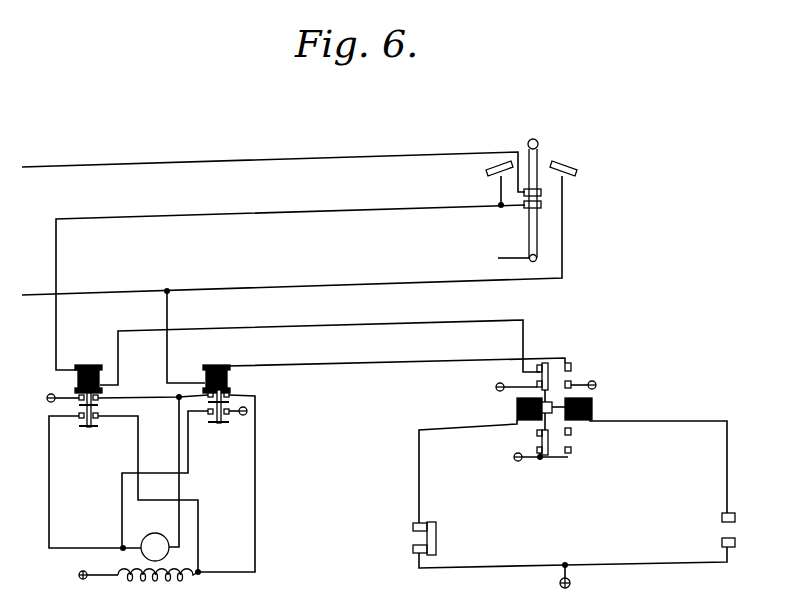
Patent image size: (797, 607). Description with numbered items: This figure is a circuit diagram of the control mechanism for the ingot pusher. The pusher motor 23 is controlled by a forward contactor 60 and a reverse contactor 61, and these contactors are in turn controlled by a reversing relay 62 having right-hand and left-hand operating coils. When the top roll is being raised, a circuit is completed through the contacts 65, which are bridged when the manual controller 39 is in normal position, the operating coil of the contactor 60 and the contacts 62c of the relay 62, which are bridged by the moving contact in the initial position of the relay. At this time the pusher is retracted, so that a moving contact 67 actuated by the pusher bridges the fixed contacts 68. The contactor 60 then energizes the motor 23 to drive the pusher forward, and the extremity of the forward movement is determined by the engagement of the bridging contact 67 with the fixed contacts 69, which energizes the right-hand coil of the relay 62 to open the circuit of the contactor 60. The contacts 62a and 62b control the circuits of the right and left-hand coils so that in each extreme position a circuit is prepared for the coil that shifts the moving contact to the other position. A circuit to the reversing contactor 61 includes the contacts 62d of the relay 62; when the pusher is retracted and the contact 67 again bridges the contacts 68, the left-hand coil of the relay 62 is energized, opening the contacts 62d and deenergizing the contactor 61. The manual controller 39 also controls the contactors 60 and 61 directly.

The pusher motor 23 is at (150, 579).
The manual controller 39 is at (511, 243).
The forward contactor 60 is at (77, 382).
The reverse contactor 61 is at (229, 376).
The reversing relay 62 is at (592, 402).
The contacts of relay 62a is at (537, 434).
The contacts of relay 62b is at (571, 434).
The contacts of relay 62c is at (537, 371).
The contacts of relay 62d is at (571, 380).
The contacts 65 is at (541, 192).
The moving contact 67 is at (437, 535).
The fixed contacts 68 is at (413, 527).
The fixed contacts 69 is at (735, 518).